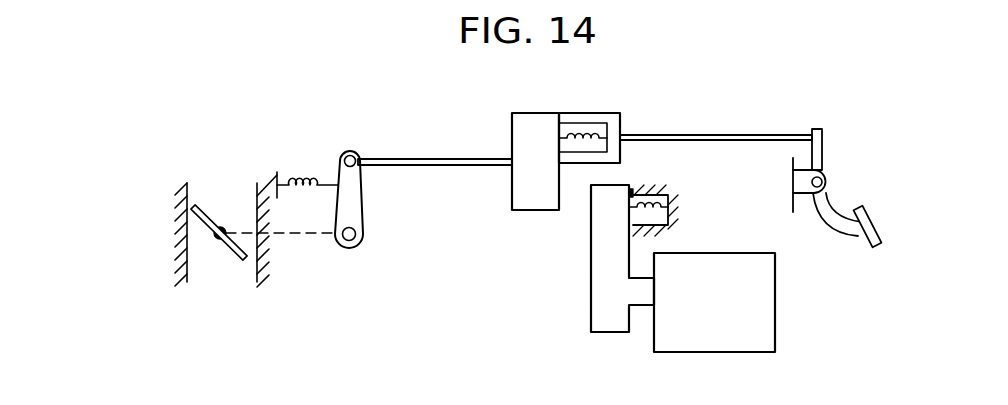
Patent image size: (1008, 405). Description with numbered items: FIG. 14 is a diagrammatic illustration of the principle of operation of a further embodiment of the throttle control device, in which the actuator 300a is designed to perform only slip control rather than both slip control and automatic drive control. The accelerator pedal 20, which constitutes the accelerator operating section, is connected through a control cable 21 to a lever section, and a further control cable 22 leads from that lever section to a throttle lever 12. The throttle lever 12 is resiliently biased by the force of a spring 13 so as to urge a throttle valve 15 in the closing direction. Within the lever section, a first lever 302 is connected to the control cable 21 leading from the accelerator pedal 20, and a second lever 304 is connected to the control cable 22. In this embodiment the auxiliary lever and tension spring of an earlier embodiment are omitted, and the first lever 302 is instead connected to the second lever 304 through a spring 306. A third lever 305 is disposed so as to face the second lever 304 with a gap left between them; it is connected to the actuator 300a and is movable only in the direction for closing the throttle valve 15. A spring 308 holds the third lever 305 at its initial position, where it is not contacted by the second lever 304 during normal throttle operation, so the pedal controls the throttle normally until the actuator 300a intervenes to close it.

The throttle lever 12 is at (357, 154).
The spring 13 is at (296, 184).
The throttle valve 15 is at (211, 224).
The accelerator pedal 20 is at (825, 140).
The control cable 21 is at (687, 136).
The control cable 22 is at (451, 158).
The first lever 302 is at (642, 99).
The second lever 304 is at (541, 95).
The third lever 305 is at (590, 293).
The spring 306 is at (607, 98).
The spring 308 is at (650, 205).
The actuator 300a is at (732, 352).